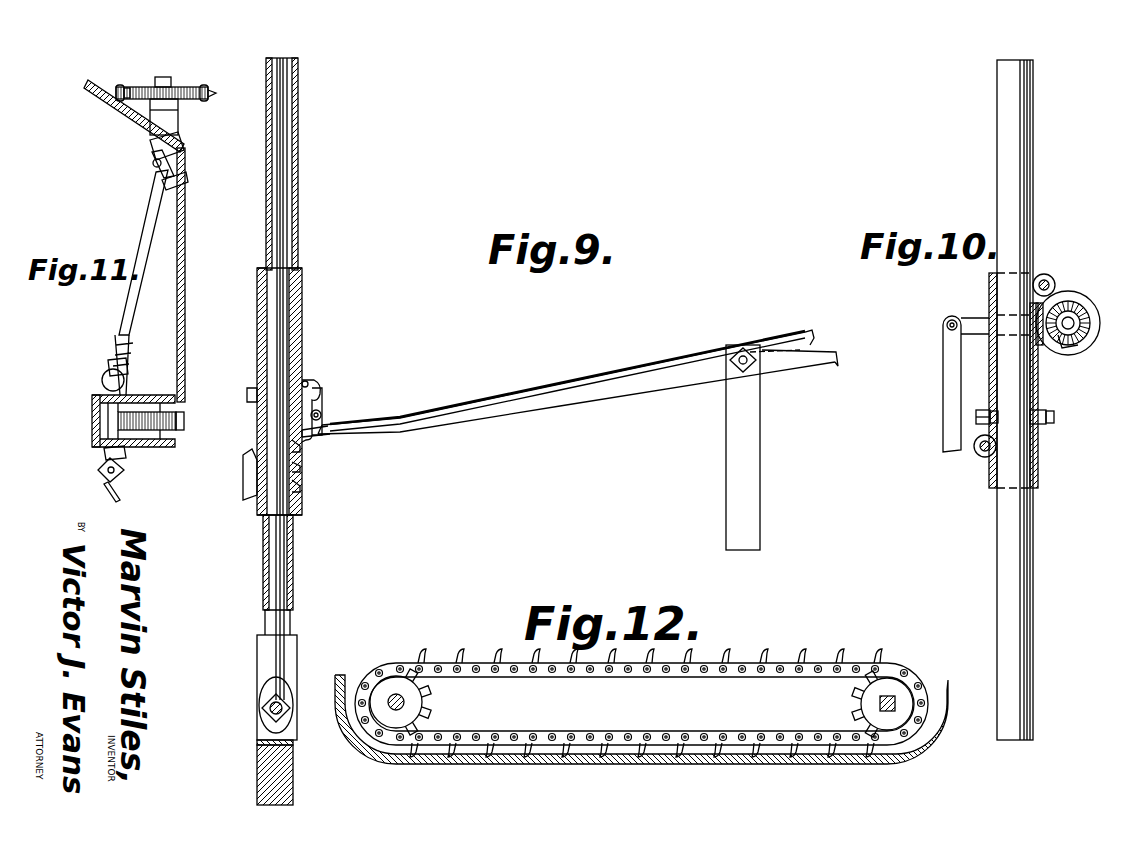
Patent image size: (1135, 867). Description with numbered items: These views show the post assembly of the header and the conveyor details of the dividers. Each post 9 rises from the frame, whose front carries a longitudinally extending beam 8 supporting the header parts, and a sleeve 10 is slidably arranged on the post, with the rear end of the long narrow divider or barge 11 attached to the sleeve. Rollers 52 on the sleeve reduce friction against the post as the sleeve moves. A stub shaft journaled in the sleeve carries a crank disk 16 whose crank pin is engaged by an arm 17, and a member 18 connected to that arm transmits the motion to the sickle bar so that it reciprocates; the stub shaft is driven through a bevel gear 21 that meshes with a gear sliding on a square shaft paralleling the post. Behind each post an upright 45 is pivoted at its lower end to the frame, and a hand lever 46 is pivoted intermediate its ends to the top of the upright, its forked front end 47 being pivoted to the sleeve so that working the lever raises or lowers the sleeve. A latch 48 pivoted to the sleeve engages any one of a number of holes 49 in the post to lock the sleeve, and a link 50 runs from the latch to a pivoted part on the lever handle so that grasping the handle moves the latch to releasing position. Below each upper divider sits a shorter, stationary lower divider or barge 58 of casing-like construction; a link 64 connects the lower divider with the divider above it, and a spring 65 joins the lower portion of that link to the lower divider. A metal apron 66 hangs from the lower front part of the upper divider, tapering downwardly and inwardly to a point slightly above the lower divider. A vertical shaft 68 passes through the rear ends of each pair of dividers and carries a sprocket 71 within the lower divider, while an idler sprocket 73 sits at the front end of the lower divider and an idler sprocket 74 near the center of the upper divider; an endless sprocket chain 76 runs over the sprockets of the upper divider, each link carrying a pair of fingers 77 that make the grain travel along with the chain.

In FIG. 9, the beam 8 is at (280, 800).
In FIG. 9, the post 9 is at (267, 155).
In FIG. 10, the post 9 is at (998, 168).
In FIG. 9, the sleeve 10 is at (257, 373).
In FIG. 10, the sleeve 10 is at (1032, 478).
In FIG. 11, the divider or barge 11 is at (128, 110).
In FIG. 10, the crank disk 16 is at (1092, 315).
In FIG. 10, the arm 17 is at (975, 318).
In FIG. 10, the member 18 is at (943, 392).
In FIG. 10, the bevel gear 21 is at (1075, 350).
In FIG. 9, the upright 45 is at (742, 423).
In FIG. 9, the hand lever 46 is at (628, 386).
In FIG. 9, the forked front end 47 is at (325, 420).
In FIG. 10, the forked front end 47 is at (992, 413).
In FIG. 9, the latch 48 is at (322, 384).
In FIG. 9, the holes 49 is at (300, 488).
In FIG. 9, the link 50 is at (551, 392).
In FIG. 10, the rollers 52 is at (1055, 283).
In FIG. 11, the lower divider or barge 58 is at (96, 452).
In FIG. 12, the lower divider or barge 58 is at (690, 762).
In FIG. 11, the link 64 is at (132, 300).
In FIG. 11, the spring 65 is at (152, 163).
In FIG. 11, the apron 66 is at (185, 298).
In FIG. 12, the vertical shaft 68 is at (895, 698).
In FIG. 12, the sprocket 71 is at (870, 690).
In FIG. 12, the idler sprocket 73 is at (388, 686).
In FIG. 11, the idler sprocket 74 is at (182, 86).
In FIG. 11, the sprocket chain 76 is at (210, 92).
In FIG. 12, the sprocket chain 76 is at (604, 677).
In FIG. 11, the fingers 77 is at (118, 86).